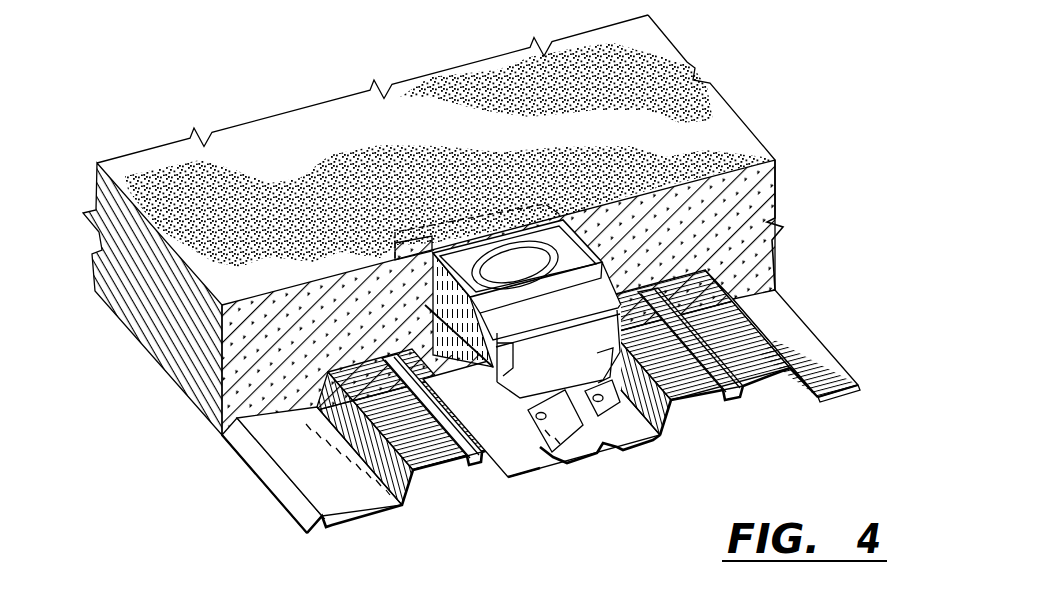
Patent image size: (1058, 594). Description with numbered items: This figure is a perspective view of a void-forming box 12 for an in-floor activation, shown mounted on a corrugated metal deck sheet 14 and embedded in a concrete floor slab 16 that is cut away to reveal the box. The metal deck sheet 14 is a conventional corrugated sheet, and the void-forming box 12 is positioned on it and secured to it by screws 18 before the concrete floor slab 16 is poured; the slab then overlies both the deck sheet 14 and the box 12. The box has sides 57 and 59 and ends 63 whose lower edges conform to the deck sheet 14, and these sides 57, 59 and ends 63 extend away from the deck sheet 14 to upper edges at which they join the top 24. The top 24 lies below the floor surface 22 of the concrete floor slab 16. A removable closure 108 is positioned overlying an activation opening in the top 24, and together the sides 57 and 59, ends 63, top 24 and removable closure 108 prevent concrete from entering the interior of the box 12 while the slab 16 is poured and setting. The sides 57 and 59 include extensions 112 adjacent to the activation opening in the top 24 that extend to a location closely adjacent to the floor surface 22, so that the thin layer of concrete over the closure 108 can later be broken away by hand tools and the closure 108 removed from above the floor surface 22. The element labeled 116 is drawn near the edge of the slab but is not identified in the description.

The insulation layer 22 is at (635, 72).
The recess opening 112 is at (400, 240).
The fixture trough 108 is at (600, 205).
The block side edge 116 is at (773, 181).
The concrete slab 16 is at (782, 222).
The slab bottom 24 is at (600, 274).
The deck panel 14 is at (795, 342).
The rib stiffener groove 59 is at (725, 355).
The deck rib 63 is at (660, 437).
The mounting brackets 18 is at (592, 393).
The fixture housing 12 is at (557, 360).
The deck rib 57 is at (470, 340).